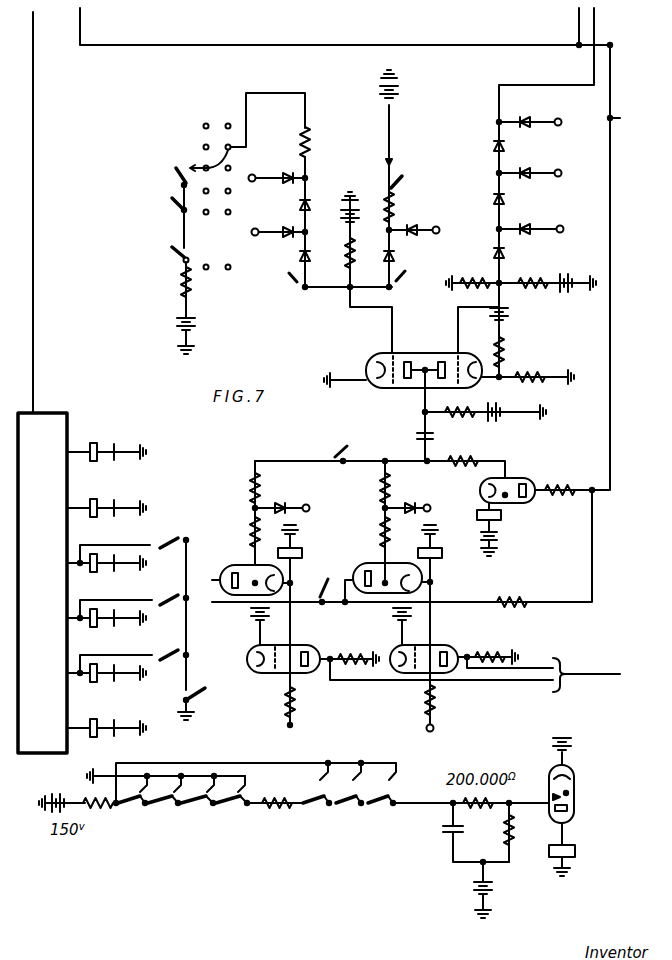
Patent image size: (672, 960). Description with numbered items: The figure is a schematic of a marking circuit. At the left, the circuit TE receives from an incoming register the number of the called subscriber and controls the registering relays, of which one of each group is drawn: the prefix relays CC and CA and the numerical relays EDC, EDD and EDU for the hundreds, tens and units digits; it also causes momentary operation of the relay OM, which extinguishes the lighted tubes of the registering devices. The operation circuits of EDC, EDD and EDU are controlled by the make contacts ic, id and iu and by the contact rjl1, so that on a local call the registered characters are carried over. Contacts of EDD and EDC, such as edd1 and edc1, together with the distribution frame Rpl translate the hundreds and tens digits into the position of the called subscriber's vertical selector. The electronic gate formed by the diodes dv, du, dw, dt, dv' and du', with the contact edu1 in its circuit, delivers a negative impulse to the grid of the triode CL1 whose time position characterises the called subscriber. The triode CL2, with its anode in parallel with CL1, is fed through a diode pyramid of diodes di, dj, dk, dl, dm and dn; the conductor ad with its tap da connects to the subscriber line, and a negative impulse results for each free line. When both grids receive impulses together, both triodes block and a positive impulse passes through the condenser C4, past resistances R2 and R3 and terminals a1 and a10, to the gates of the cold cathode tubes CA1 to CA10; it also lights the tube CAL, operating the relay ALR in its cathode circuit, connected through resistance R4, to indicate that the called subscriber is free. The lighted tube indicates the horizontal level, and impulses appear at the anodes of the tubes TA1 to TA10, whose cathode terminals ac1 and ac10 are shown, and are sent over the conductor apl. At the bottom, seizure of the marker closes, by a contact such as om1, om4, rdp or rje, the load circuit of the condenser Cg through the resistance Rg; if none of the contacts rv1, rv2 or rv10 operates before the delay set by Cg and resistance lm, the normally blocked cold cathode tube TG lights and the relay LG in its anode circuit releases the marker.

The conductor ad is at (598, 26).
The supply tap da is at (600, 109).
The distribution frame Rpl is at (250, 179).
The contact of relay EDD edd1 is at (159, 187).
The make contact of relay EDC edc1 is at (159, 295).
The diode dv is at (276, 168).
The diode dt is at (315, 198).
The diode du is at (278, 222).
The diode dw is at (318, 260).
The contact edu1 is at (413, 190).
The diode dv' is at (413, 219).
The diode du' is at (402, 260).
The diode di is at (535, 112).
The diode dj is at (508, 146).
The diode dk is at (536, 181).
The diode dl is at (485, 200).
The diode dm is at (538, 221).
The diode dn is at (485, 254).
The triode CL1 is at (410, 359).
The triode CL2 is at (485, 424).
The condenser C4 is at (436, 454).
The resistor R2 is at (242, 513).
The terminal a1 is at (293, 509).
The resistor R3 is at (242, 532).
The cold cathode tube CA1 is at (246, 570).
The cold cathode tube CA10 is at (383, 531).
The terminal a10 is at (425, 509).
The cold cathode tube CAL is at (536, 481).
The relay ALR is at (504, 529).
The resistor R4 is at (512, 588).
The tube TA1 is at (380, 644).
The terminal ac1 is at (305, 704).
The tube TA10 is at (471, 640).
The terminal ac10 is at (452, 705).
The conductor apl is at (586, 671).
The circuit TE is at (42, 583).
The relay of prefix group CC is at (106, 442).
The relay of prefix group CA is at (106, 498).
The relay EDC is at (106, 576).
The relay EDD is at (106, 631).
The relay EDU is at (106, 686).
The relay OM is at (106, 739).
The make contact ic is at (174, 531).
The make contact id is at (174, 588).
The make contact iu is at (174, 643).
The contact of relay RJL rjl1 is at (201, 704).
The contact of relay OM om1 is at (131, 810).
The contact of relay OM om4 is at (165, 810).
The contact of relay RDP rdp is at (201, 810).
The contact of relay RJE rje is at (235, 810).
The resistor Rg is at (274, 792).
The contact of relay RV.10 rv10 is at (314, 811).
The contact of relay RV.2 rv2 is at (352, 811).
The contact of relay RV.1 rv1 is at (388, 811).
The condenser Cg is at (476, 860).
The resistor lm is at (525, 832).
The cold cathode tube TG is at (575, 780).
The relay LG is at (575, 849).